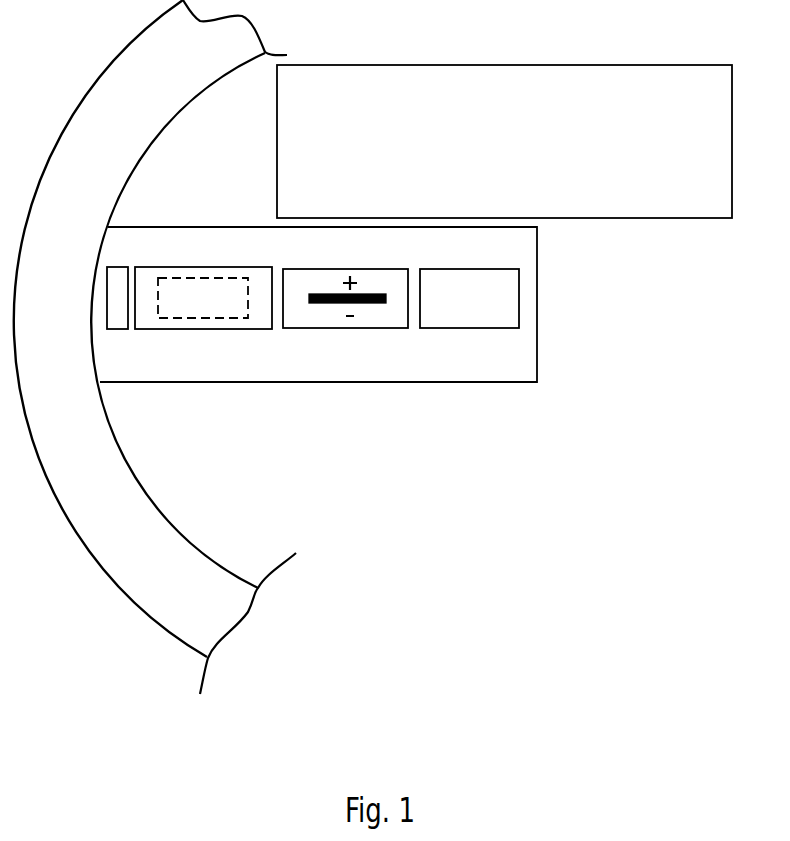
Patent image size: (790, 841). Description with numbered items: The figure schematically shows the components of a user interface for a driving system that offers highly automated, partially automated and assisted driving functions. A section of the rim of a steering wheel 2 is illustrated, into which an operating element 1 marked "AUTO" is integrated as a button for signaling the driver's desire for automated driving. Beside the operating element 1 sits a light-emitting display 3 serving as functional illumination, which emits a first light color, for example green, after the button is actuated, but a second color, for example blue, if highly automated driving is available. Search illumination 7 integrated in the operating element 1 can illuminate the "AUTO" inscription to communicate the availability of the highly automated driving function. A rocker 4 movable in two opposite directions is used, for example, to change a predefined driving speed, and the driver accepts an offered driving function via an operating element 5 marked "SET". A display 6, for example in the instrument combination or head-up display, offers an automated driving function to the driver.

The operating element 1 is at (268, 329).
The steering wheel 2 is at (138, 160).
The light-emitting display 3 is at (118, 328).
The rocker 4 is at (365, 302).
The operating element 5 is at (503, 327).
The display 6 is at (633, 218).
The search illumination 7 is at (204, 320).